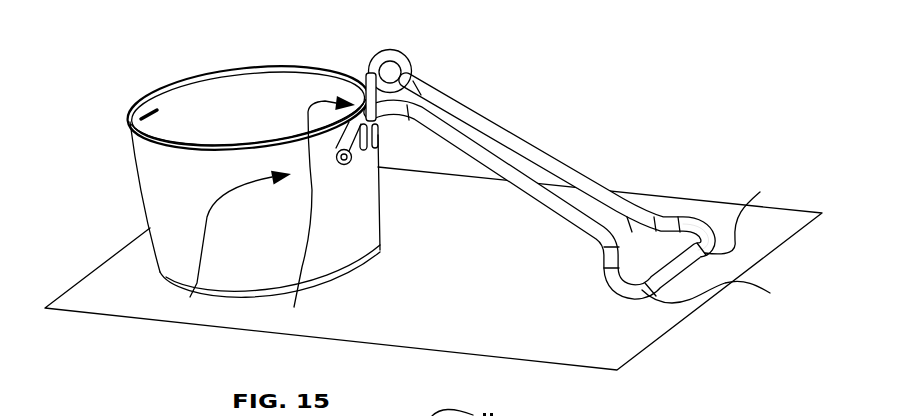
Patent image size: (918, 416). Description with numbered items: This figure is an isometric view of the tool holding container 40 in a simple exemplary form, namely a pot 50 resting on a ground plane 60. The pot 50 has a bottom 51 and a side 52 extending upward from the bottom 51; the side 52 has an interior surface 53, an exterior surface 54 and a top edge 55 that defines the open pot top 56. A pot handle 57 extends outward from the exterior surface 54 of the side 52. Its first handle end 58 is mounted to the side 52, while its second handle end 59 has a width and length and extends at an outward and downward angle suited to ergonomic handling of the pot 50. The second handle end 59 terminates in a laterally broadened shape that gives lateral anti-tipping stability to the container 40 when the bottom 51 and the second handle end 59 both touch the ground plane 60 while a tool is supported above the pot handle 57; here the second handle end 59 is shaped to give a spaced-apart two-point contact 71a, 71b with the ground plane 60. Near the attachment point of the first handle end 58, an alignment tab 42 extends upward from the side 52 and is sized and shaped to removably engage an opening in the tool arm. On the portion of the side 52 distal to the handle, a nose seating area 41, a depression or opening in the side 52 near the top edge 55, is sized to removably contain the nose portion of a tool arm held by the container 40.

The container 40 is at (253, 244).
The nose seating area 41 is at (138, 88).
The alignment tab 42 is at (425, 39).
The pot 50 is at (111, 196).
The bottom 51 is at (244, 317).
The side 52 is at (108, 171).
The interior surface 53 is at (302, 88).
The exterior surface 54 is at (185, 291).
The top edge 55 is at (222, 144).
The open pot top 56 is at (194, 110).
The pot handle 57 is at (545, 126).
The first handle end 58 is at (318, 213).
The second handle end 59 is at (701, 195).
The ground plane 60 is at (677, 327).
The two-point contact 71a is at (747, 216).
The two-point contact 71b is at (722, 293).